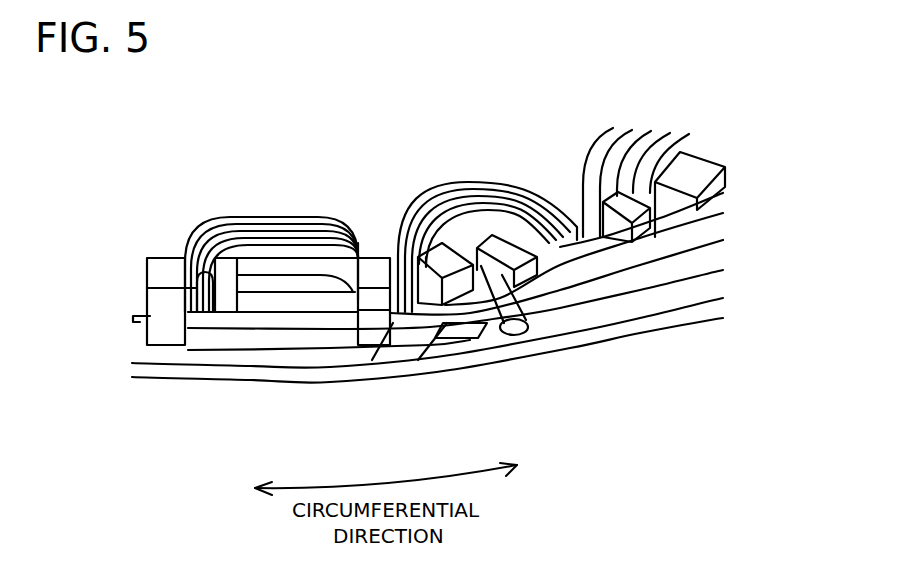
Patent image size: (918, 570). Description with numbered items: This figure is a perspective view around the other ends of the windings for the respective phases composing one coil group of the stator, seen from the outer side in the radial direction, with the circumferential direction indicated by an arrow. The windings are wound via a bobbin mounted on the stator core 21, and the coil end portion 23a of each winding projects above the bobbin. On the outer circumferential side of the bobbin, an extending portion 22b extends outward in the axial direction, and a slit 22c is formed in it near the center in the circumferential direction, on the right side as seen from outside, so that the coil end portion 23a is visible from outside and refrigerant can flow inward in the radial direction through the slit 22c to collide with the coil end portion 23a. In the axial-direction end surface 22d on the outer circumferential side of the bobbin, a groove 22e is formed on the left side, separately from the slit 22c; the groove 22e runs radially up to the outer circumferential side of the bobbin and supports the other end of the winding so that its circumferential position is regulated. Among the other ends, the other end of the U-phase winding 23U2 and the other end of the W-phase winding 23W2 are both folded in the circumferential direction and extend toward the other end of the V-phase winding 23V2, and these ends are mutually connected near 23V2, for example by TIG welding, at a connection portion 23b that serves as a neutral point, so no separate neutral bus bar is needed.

The stator core 21 is at (657, 290).
The extending portion 22b is at (173, 322).
The slit 22c is at (293, 302).
The axial-direction end surface 22d is at (165, 268).
The groove 22e is at (190, 335).
The coil end portion 23a is at (235, 228).
The connection portion 23b is at (516, 334).
The other end of the U-phase winding 23U2 is at (655, 258).
The other end of the V-phase winding 23V2 is at (467, 257).
The other end of the W-phase winding 23W2 is at (343, 320).